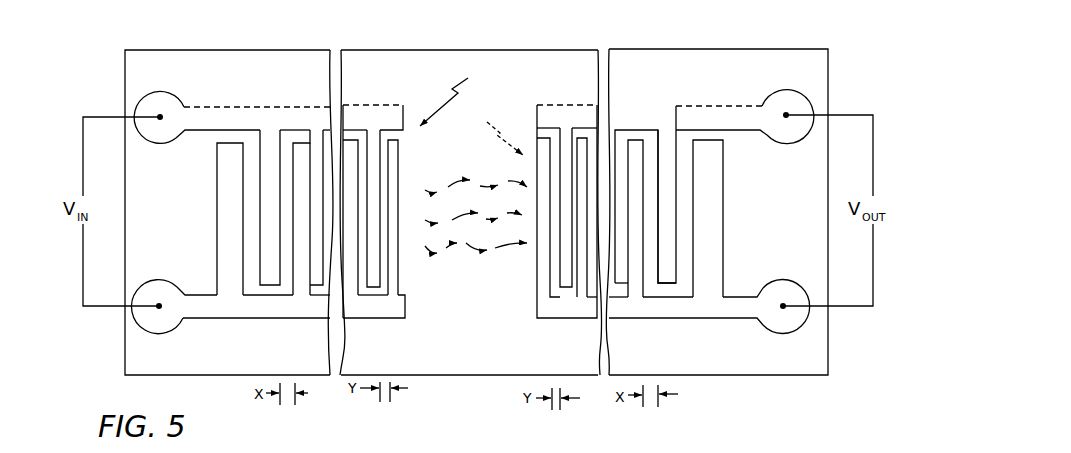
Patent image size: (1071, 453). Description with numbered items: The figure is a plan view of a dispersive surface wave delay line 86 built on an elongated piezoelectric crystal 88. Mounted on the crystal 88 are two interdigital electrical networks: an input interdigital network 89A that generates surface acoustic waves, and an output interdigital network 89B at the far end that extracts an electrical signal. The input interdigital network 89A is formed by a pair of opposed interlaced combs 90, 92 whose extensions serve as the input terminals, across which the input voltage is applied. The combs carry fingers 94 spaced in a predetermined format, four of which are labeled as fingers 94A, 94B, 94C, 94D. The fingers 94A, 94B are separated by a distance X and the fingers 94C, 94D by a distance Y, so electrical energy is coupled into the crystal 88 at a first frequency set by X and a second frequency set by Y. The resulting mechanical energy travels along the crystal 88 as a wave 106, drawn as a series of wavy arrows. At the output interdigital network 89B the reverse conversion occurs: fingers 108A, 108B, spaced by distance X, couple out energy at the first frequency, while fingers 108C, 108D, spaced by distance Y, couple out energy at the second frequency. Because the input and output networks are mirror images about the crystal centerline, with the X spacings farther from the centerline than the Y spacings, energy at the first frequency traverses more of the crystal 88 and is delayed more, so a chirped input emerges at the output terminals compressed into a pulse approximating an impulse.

The delay line 86 is at (424, 392).
The piezoelectric crystal 88 is at (261, 71).
The input interdigital network 89A is at (460, 95).
The output interdigital network 89B is at (488, 129).
The comb 90 is at (205, 112).
The comb 92 is at (197, 316).
The fingers 94 is at (220, 202).
The finger 94A is at (262, 148).
The finger 94B is at (305, 148).
The finger 94C is at (351, 150).
The finger 94D is at (374, 133).
The wave 106 is at (479, 248).
The finger 108A is at (670, 152).
The finger 108B is at (633, 147).
The finger 108C is at (563, 142).
The finger 108D is at (543, 162).